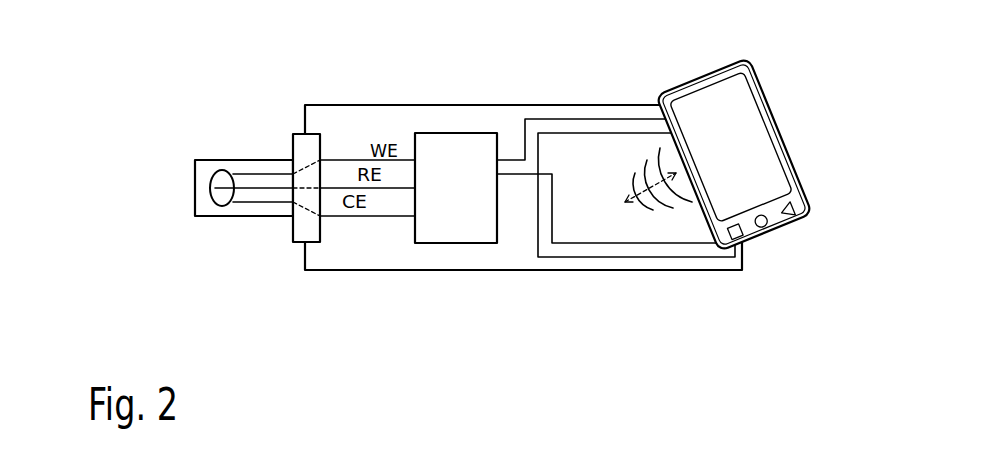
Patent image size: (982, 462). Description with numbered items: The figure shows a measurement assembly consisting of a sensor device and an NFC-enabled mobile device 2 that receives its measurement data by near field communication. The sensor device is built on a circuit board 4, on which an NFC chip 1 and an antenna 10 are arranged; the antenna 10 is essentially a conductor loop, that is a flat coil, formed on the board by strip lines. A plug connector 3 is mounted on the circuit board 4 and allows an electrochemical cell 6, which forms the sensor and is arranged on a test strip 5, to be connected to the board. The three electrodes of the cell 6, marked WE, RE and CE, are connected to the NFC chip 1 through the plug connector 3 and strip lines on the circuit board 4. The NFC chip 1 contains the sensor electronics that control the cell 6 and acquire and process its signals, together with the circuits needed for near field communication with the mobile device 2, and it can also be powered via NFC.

The NFC chip 1 is at (497, 196).
The NFC-enabled mobile device 2 is at (807, 195).
The plug connector 3 is at (298, 243).
The circuit board 4 is at (615, 270).
The test strip 5 is at (197, 217).
The electrochemical cell 6 is at (223, 188).
The antenna 10 is at (565, 120).